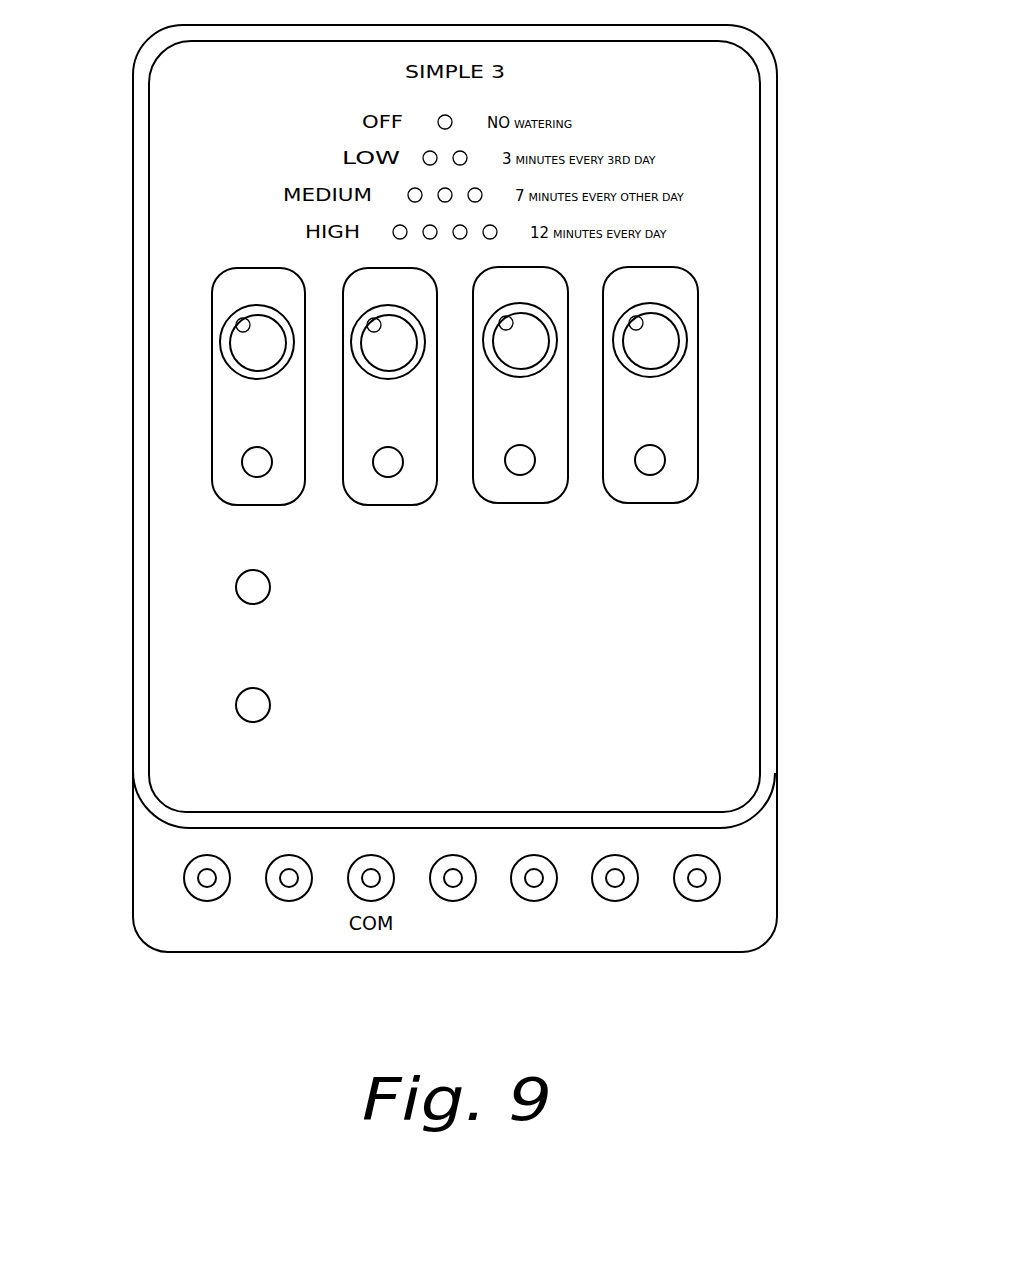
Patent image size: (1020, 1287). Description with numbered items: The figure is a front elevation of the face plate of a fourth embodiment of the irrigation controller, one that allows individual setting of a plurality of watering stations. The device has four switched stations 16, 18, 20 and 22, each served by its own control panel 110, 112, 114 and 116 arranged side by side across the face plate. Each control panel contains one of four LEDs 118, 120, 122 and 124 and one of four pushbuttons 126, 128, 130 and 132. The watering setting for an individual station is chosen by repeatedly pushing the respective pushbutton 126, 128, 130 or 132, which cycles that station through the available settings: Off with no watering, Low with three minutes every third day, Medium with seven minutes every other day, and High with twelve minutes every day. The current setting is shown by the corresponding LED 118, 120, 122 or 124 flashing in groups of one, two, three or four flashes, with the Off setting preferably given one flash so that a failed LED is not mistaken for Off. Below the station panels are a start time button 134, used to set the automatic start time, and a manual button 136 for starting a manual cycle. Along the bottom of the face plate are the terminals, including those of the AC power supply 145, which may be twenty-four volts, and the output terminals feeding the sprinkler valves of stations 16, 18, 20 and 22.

The control panel 110 is at (215, 427).
The control panel 112 is at (353, 286).
The control panel 114 is at (540, 292).
The control panel 116 is at (687, 425).
The LED 118 is at (240, 352).
The LED 120 is at (362, 345).
The LED 122 is at (538, 335).
The LED 124 is at (664, 320).
The pushbutton 126 is at (245, 462).
The pushbutton 128 is at (377, 456).
The pushbutton 130 is at (528, 467).
The pushbutton 132 is at (657, 457).
The start time button 134 is at (237, 592).
The manual button 136 is at (240, 712).
The AC power supply 145 is at (268, 888).
The switched station 16 is at (433, 892).
The switched station 18 is at (518, 890).
The switched station 20 is at (595, 890).
The switched station 22 is at (675, 890).